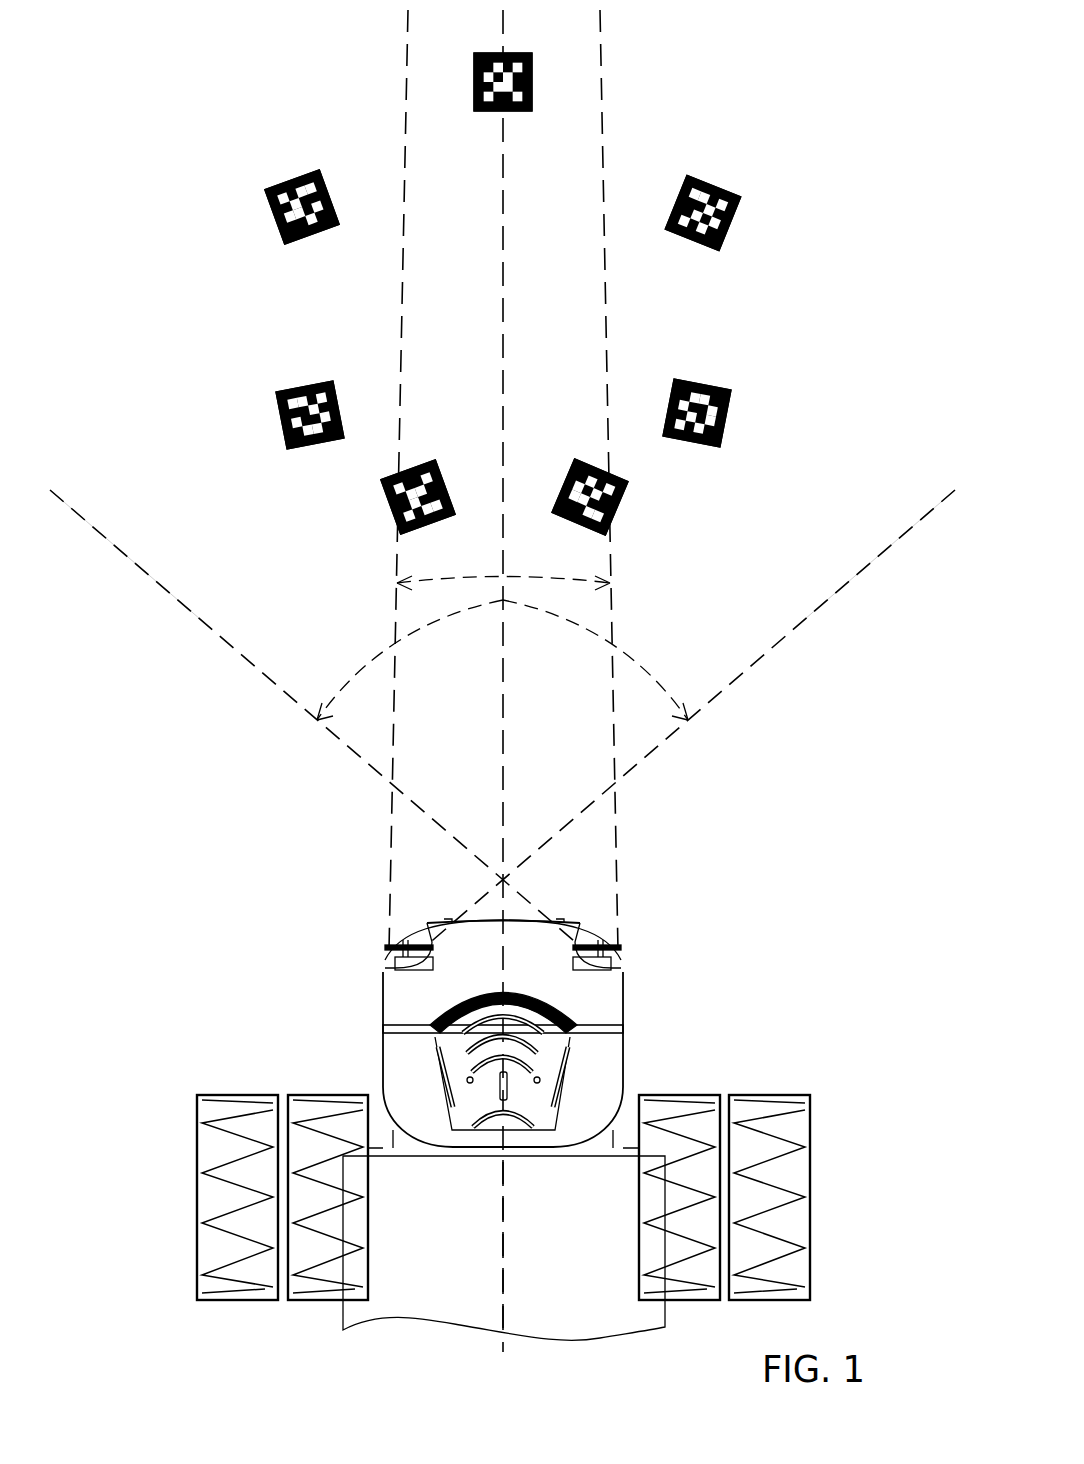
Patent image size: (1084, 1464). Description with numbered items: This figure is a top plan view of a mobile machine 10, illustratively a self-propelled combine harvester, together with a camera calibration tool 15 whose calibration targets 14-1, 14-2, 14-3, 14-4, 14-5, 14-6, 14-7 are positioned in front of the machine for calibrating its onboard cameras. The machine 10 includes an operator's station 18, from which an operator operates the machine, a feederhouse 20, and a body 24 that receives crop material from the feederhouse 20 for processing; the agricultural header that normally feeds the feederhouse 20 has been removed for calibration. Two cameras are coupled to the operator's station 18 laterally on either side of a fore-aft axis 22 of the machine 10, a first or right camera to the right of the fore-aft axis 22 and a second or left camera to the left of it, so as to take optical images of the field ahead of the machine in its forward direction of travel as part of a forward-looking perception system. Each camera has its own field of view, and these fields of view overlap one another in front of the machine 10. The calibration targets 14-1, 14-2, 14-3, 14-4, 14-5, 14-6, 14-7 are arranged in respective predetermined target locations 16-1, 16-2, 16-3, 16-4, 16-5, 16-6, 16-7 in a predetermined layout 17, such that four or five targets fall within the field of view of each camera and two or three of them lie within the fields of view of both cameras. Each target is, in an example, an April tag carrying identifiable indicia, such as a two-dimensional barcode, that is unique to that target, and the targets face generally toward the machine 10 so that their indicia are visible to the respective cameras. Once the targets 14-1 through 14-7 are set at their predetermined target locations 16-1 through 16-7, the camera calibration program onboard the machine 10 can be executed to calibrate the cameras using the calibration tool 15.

The mobile machine 10 is at (152, 1224).
The calibration target 14-1 is at (283, 442).
The calibration target 14-2 is at (395, 525).
The calibration target 14-3 is at (283, 240).
The calibration target 14-4 is at (725, 440).
The calibration target 14-5 is at (615, 523).
The calibration target 14-6 is at (728, 238).
The calibration target 14-7 is at (473, 72).
The camera calibration tool 15 is at (208, 527).
The predetermined target location 16-1 is at (300, 388).
The predetermined target location 16-2 is at (392, 490).
The predetermined target location 16-3 is at (290, 190).
The predetermined target location 16-4 is at (710, 385).
The predetermined target location 16-5 is at (613, 470).
The predetermined target location 16-6 is at (710, 185).
The predetermined target location 16-7 is at (498, 52).
The predetermined layout 17 is at (760, 537).
The operator's station 18 is at (427, 1003).
The feederhouse 20 is at (392, 965).
The fore-aft axis 22 is at (503, 1224).
The body 24 is at (612, 1257).